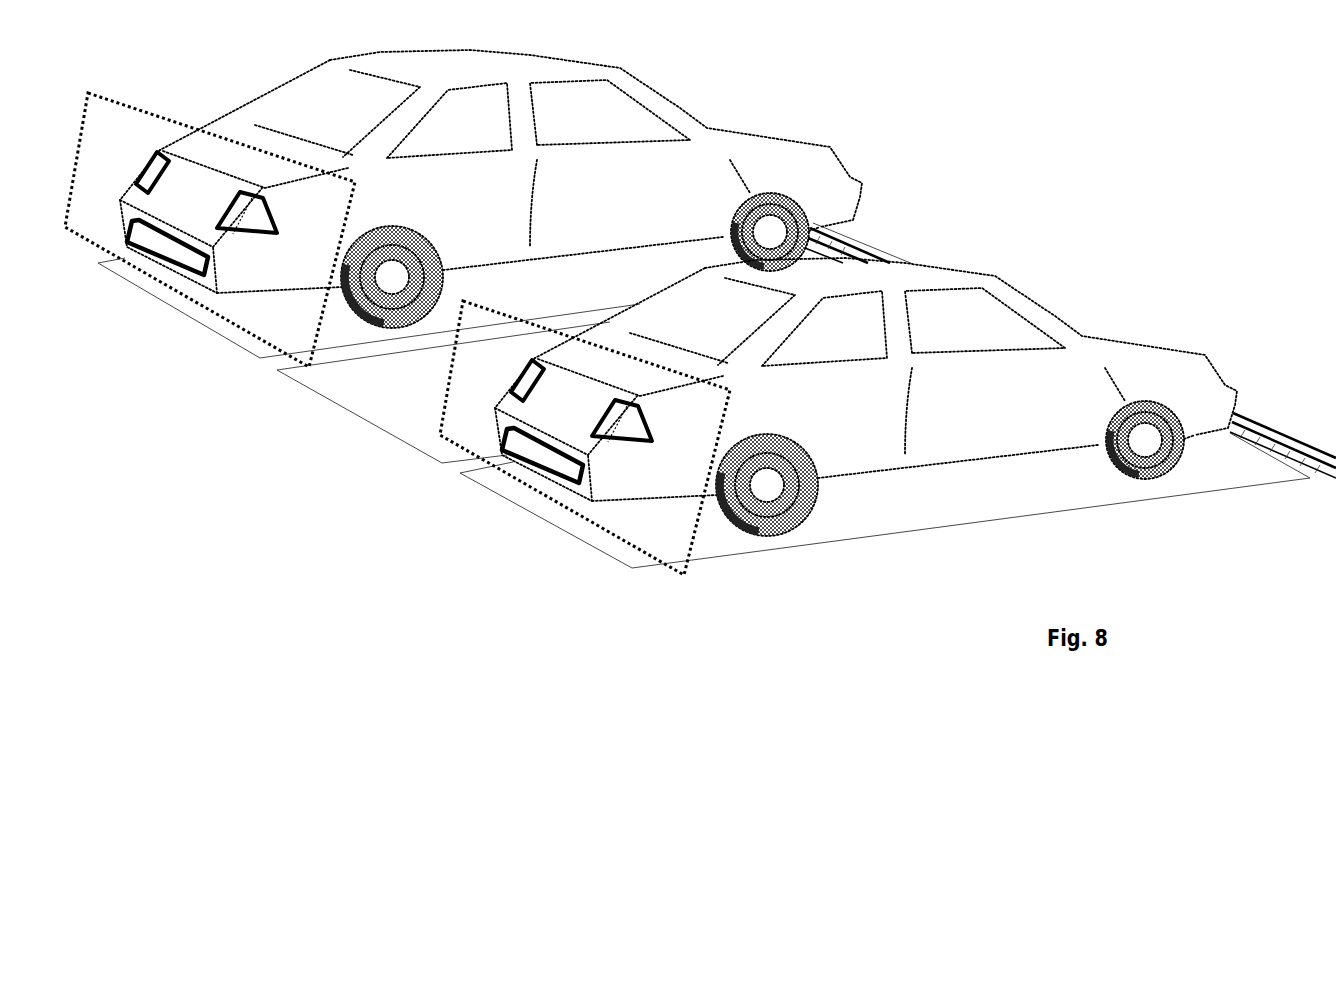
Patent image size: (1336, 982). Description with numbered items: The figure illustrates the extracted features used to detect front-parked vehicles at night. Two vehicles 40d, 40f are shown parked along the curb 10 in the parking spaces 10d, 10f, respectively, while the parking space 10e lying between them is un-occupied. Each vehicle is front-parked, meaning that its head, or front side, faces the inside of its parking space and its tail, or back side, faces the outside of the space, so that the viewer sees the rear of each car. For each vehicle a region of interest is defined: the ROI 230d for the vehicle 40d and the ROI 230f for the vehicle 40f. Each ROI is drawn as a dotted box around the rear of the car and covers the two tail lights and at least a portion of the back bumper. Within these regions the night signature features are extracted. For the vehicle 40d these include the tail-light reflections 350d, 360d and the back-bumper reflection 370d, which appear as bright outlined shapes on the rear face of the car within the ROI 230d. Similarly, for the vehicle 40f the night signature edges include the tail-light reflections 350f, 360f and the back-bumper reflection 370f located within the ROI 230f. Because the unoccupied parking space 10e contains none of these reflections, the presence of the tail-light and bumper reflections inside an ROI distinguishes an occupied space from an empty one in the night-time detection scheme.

The curb 10 is at (1272, 433).
The parking space 10d is at (556, 527).
The parking space 10e is at (370, 421).
The parking space 10f is at (188, 307).
The front-parked vehicle 40d is at (866, 397).
The front-parked vehicle 40f is at (627, 217).
The ROI 230d is at (585, 429).
The ROI 230f is at (193, 129).
The tail-light reflection 350d is at (504, 370).
The tail-light reflection 350f is at (147, 168).
The tail-light reflection 360d is at (654, 418).
The tail-light reflection 360f is at (270, 212).
The back-bumper reflection 370d is at (549, 436).
The back-bumper reflection 370f is at (176, 247).